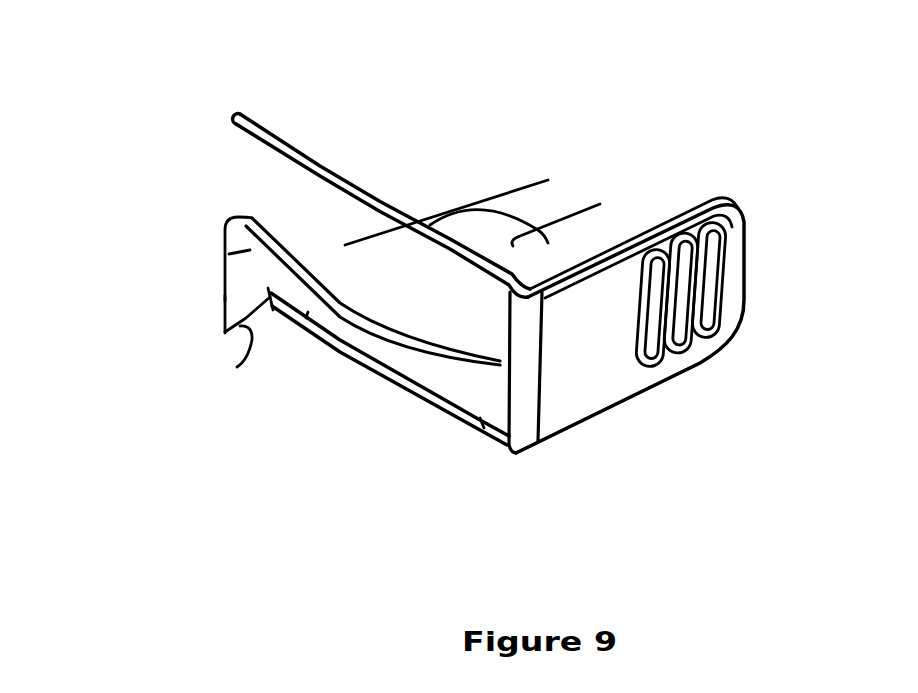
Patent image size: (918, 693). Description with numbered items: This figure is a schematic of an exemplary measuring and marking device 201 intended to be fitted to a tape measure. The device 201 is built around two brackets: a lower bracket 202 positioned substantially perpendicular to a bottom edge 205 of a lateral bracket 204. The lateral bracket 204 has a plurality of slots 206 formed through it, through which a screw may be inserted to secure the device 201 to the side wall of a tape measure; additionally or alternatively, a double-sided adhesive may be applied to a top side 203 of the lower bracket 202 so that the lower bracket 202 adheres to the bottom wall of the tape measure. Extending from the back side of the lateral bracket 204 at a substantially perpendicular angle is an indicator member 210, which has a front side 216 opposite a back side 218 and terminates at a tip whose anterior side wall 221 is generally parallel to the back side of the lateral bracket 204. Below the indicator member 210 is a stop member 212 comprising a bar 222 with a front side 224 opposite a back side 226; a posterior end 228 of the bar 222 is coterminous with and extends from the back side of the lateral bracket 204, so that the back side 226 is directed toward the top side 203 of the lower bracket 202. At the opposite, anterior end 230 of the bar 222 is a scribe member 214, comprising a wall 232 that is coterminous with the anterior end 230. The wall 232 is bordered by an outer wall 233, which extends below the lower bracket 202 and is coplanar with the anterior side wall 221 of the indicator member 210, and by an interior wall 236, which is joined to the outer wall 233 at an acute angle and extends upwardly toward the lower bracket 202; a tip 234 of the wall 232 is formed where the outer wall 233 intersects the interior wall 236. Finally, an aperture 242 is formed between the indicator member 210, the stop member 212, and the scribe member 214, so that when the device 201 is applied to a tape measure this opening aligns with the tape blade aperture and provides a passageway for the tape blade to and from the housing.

The measuring and marking device 201 is at (663, 75).
The lower bracket 202 is at (600, 204).
The top side 203 is at (553, 262).
The lateral bracket 204 is at (606, 389).
The bottom edge 205 is at (560, 430).
The slots 206 is at (724, 239).
The indicator member 210 is at (288, 132).
The stop member 212 is at (450, 394).
The scribe member 214 is at (250, 272).
The front side 216 is at (347, 194).
The back side 218 is at (410, 213).
The anterior side wall 221 is at (232, 121).
The bar 222 is at (408, 373).
The front side 224 is at (348, 357).
The back side 226 is at (362, 311).
The posterior end 228 is at (480, 418).
The anterior end 230 is at (306, 318).
The wall 232 is at (225, 244).
The outer wall 233 is at (225, 301).
The tip 234 is at (225, 334).
The interior wall 236 is at (237, 367).
The aperture 242 is at (568, 201).